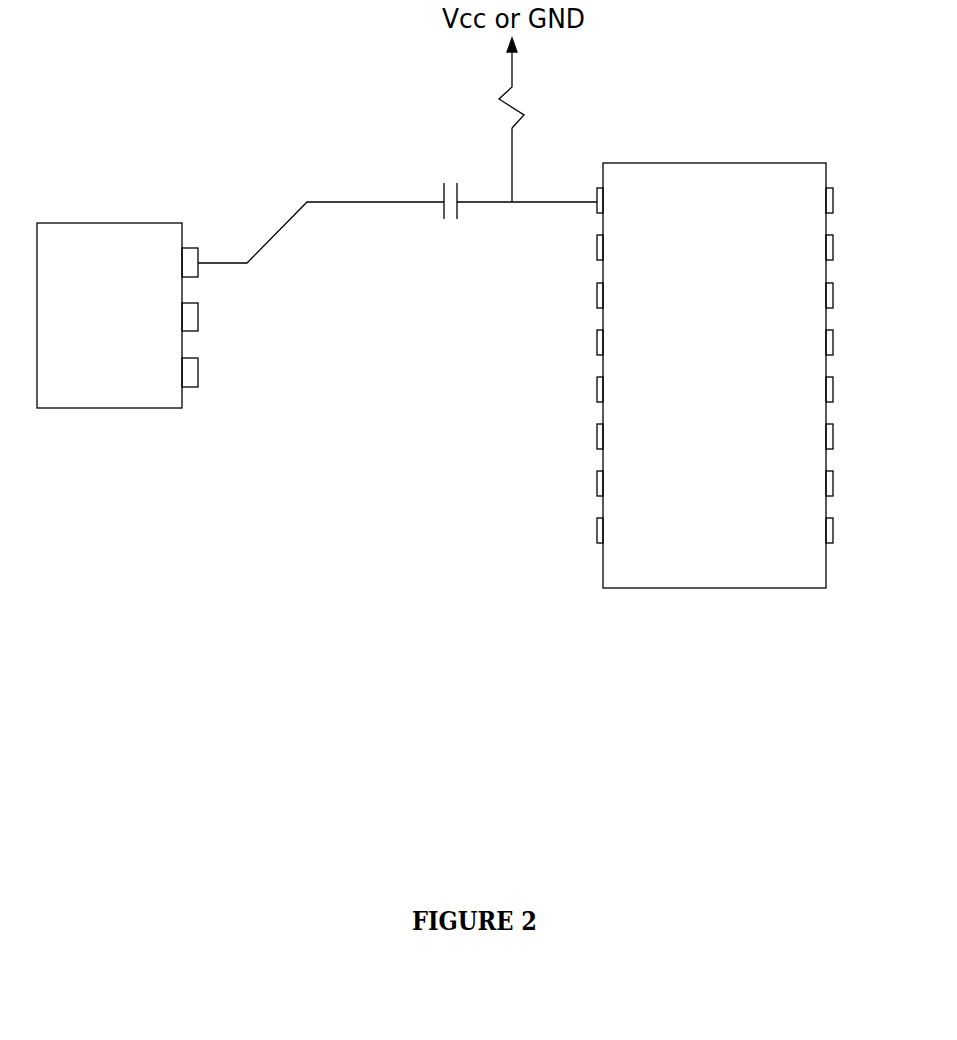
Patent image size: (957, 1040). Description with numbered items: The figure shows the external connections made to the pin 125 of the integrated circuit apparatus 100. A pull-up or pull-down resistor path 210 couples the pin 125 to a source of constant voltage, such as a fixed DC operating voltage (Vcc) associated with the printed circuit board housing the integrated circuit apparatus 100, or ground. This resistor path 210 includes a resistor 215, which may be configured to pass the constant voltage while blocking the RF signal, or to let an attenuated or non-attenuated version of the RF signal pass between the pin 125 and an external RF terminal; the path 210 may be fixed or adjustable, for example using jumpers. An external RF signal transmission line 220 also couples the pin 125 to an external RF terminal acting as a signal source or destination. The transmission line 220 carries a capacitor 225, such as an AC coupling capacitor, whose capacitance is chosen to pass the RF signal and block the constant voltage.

The integrated circuit apparatus 100 is at (715, 163).
The pin 125 is at (597, 190).
The pull-up or pull-down resistor path 210 is at (510, 172).
The resistor 215 is at (498, 103).
The external RF signal transmission line 220 is at (390, 206).
The capacitor 225 is at (450, 218).